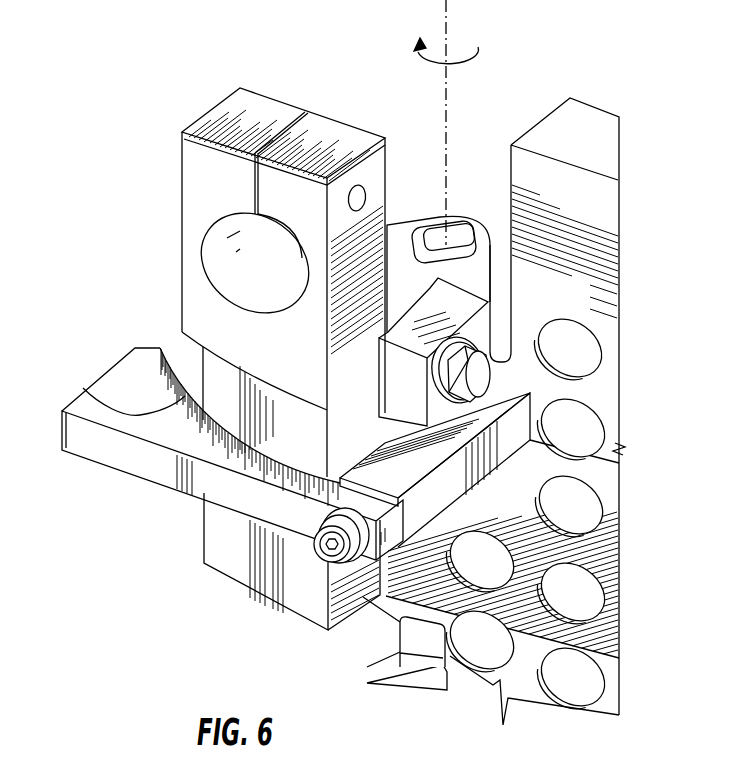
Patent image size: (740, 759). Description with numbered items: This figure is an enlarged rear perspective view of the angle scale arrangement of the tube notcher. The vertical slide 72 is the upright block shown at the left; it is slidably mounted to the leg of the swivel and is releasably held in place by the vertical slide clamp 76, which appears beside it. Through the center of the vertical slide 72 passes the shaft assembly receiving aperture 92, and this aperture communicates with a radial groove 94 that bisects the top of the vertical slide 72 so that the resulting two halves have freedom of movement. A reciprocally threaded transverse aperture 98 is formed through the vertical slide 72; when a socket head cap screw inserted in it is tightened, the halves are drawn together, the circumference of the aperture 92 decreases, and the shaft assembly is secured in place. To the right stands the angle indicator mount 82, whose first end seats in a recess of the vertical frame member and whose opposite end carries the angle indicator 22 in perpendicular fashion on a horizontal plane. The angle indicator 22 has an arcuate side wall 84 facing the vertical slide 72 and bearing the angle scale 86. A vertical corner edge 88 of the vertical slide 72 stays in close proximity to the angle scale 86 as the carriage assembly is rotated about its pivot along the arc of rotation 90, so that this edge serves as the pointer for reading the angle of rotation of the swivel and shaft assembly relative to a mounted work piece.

The angle indicator 22 is at (217, 487).
The vertical slide 72 is at (271, 351).
The vertical slide clamp 76 is at (460, 307).
The angle indicator mount 82 is at (515, 460).
The arcuate side wall 84 is at (172, 372).
The angle scale 86 is at (213, 426).
The vertical corner edge 88 is at (324, 588).
The arc of rotation 90 is at (482, 61).
The shaft assembly receiving aperture 92 is at (222, 252).
The radial groove 94 is at (283, 128).
The transverse aperture 98 is at (366, 196).